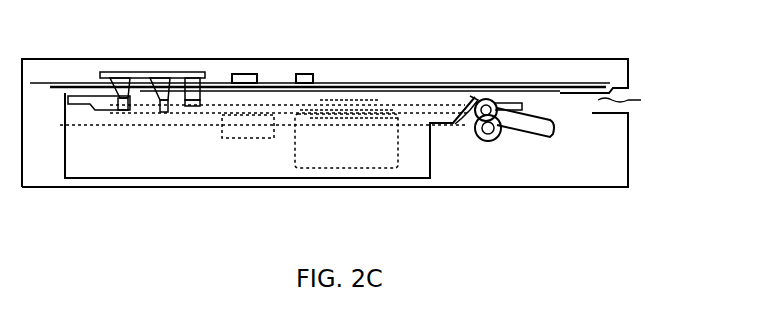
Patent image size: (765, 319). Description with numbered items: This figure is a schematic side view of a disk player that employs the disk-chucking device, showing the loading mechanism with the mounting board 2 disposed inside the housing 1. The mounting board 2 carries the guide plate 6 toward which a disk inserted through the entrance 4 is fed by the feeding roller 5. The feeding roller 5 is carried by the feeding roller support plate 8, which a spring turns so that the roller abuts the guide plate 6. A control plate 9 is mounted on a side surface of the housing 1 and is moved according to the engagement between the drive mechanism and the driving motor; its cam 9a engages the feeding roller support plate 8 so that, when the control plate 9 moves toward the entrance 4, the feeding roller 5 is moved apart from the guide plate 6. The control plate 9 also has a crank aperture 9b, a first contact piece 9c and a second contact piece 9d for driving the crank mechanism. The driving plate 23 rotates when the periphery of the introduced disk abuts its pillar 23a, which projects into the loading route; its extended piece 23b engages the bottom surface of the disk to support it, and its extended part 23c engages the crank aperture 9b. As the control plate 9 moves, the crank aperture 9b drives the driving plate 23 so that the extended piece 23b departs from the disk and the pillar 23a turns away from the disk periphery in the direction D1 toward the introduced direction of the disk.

The housing 1 is at (628, 152).
The mounting board 2 is at (396, 83).
The entrance 4 is at (626, 103).
The feeding roller 5 is at (482, 140).
The guide plate 6 is at (547, 93).
The feeding roller support plate 8 is at (544, 137).
The control plate 9 is at (230, 178).
The cam 9a is at (466, 123).
The crank aperture 9b is at (68, 107).
The first contact piece 9c is at (246, 74).
The second contact piece 9d is at (304, 74).
The driving plate 23 is at (150, 68).
The pillar 23a is at (180, 73).
The extended piece 23b is at (195, 112).
The extended part 23c is at (120, 110).
The direction D1 is at (448, 88).